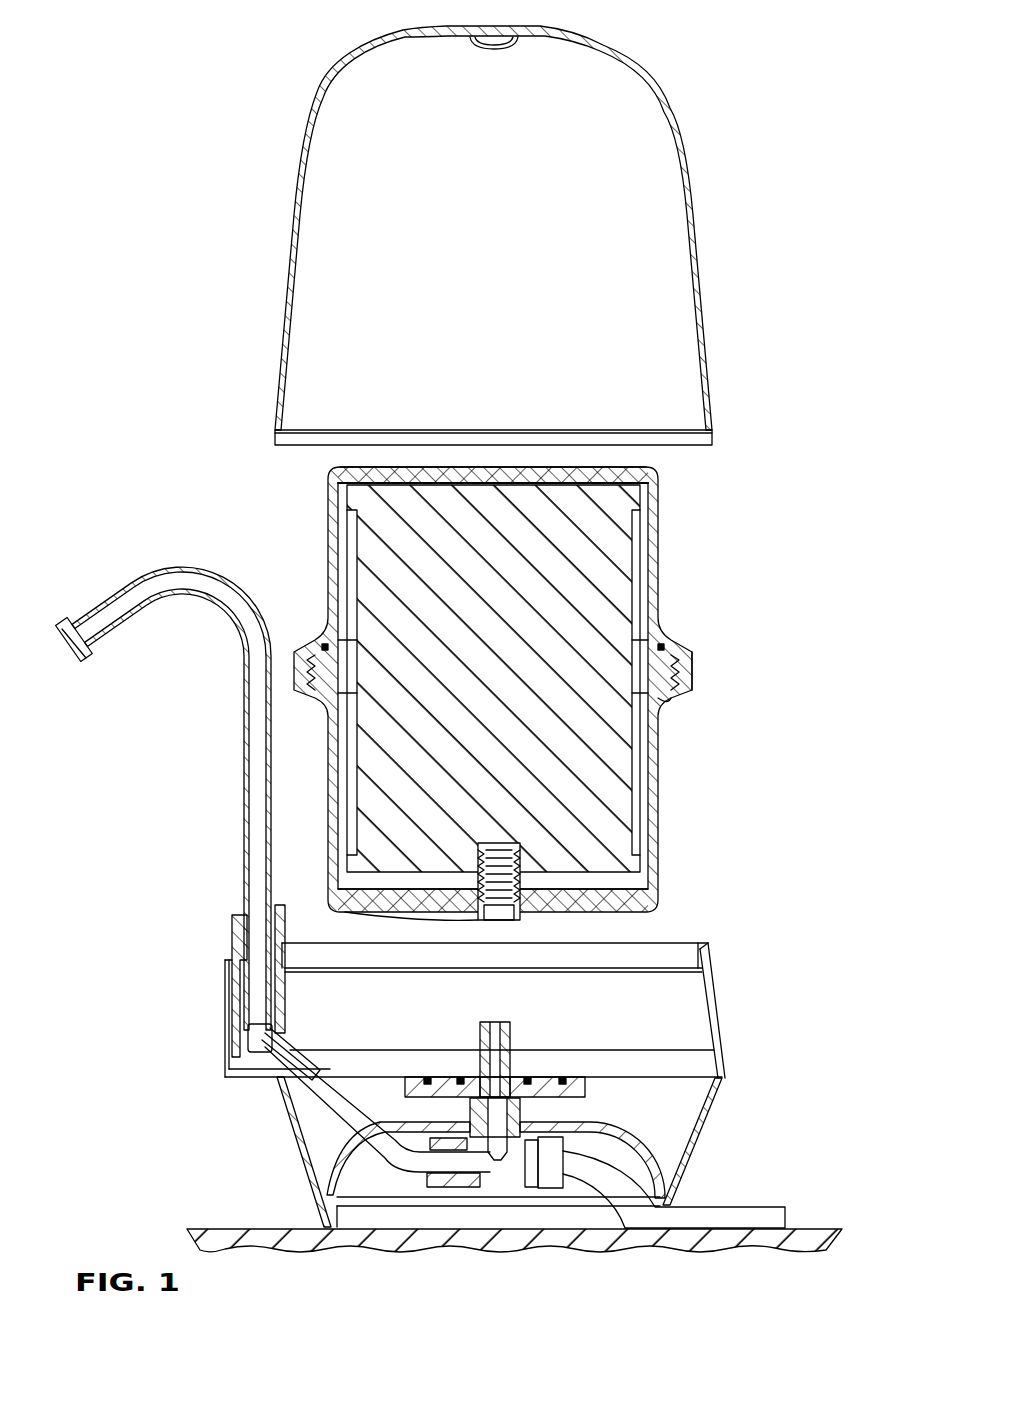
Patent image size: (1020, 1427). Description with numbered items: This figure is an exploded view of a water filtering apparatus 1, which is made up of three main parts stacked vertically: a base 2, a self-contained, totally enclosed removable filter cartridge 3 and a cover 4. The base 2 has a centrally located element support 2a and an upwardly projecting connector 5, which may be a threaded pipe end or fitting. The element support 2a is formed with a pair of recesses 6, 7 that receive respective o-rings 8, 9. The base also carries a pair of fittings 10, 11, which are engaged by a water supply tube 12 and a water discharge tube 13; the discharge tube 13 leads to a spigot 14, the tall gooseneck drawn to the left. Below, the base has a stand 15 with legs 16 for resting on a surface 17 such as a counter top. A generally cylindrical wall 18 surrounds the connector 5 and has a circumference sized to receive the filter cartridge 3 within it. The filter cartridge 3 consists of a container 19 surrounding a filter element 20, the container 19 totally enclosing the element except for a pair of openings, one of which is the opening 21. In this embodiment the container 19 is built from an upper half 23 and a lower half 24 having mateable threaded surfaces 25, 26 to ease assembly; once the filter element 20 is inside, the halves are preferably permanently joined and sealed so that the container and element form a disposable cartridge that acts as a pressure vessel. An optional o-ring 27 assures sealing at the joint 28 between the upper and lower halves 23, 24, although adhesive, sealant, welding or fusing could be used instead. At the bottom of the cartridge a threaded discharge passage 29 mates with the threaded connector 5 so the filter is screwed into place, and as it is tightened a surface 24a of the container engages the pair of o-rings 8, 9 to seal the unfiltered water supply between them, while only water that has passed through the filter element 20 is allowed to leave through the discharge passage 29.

The water filtering apparatus 1 is at (98, 210).
The base 2 is at (745, 1028).
The element support 2a is at (582, 1093).
The filter cartridge 3 is at (778, 614).
The cover 4 is at (726, 236).
The connector 5 is at (512, 1033).
The recess 6 is at (568, 1078).
The recess 7 is at (525, 1078).
The o-ring 8 is at (425, 1076).
The o-ring 9 is at (460, 1076).
The fitting 10 is at (548, 1182).
The fitting 11 is at (440, 1188).
The water supply tube 12 is at (745, 1193).
The water discharge tube 13 is at (342, 1102).
The spigot 14 is at (98, 653).
The stand 15 is at (700, 1111).
The legs 16 is at (337, 1208).
The surface 17 is at (225, 1233).
The cylindrical wall 18 is at (712, 1007).
The container 19 is at (655, 855).
The filter element 20 is at (617, 576).
The opening 21 is at (490, 920).
The upper half 23 is at (653, 512).
The lower half 24 is at (652, 762).
The surface 24a is at (395, 923).
The threaded surface 25 is at (692, 672).
The threaded surface 26 is at (660, 700).
The o-ring 27 is at (660, 648).
The joint 28 is at (324, 648).
The discharge passage 29 is at (500, 866).